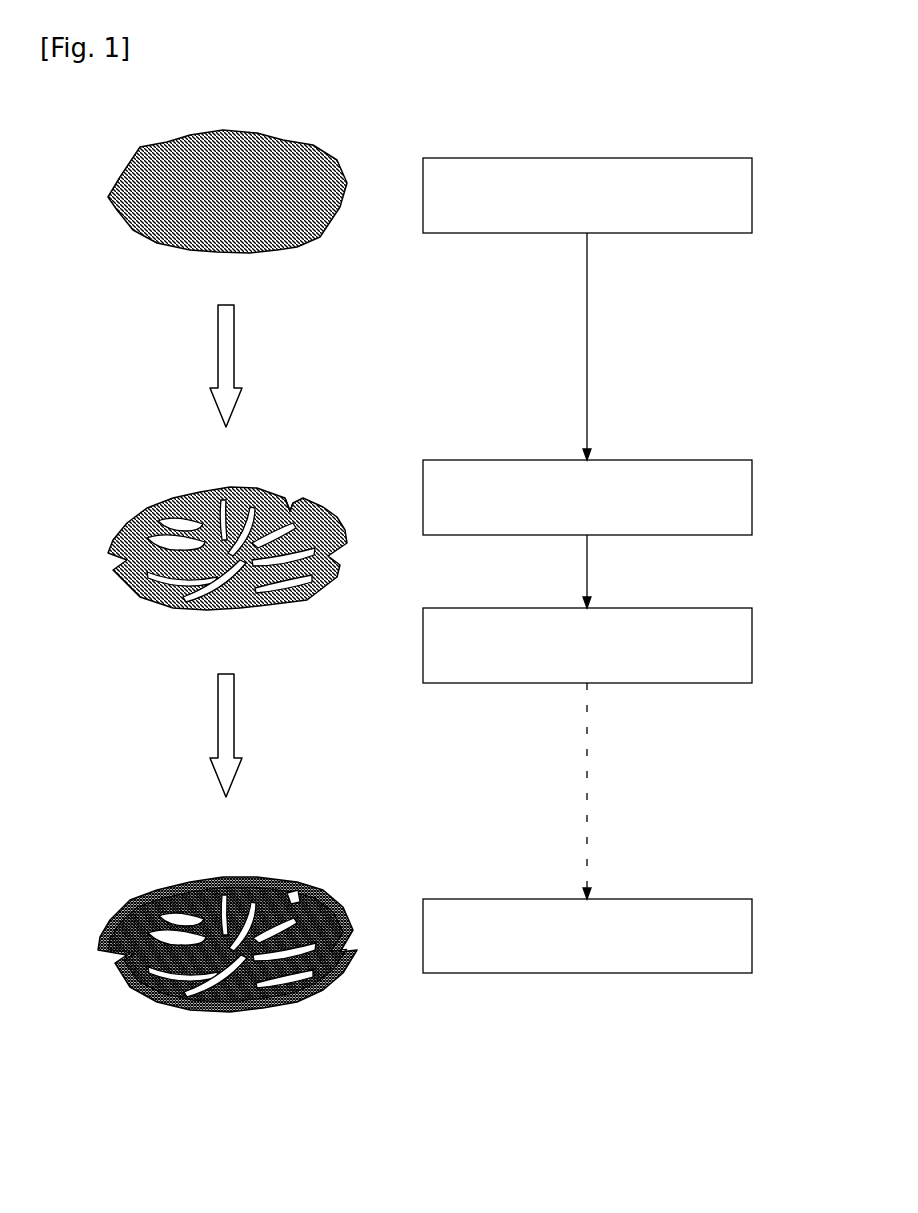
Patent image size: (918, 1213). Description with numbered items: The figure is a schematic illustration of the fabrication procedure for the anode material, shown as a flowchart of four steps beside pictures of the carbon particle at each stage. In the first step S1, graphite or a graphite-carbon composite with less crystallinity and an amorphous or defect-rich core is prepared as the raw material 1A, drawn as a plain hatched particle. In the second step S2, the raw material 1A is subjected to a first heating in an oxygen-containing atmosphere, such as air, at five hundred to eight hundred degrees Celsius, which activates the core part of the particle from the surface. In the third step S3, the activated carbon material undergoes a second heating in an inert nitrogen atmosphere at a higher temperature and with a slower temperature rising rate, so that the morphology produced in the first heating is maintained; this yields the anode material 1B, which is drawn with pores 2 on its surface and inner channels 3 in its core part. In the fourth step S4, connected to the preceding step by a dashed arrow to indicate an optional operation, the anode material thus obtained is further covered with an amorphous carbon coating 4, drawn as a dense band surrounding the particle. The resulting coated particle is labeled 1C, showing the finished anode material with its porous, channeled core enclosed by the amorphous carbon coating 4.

The raw material 1A is at (285, 253).
The anode material 1B is at (234, 543).
The carbon material coated with amorphous carbon 1C is at (230, 941).
The pores 2 is at (292, 506).
The inner channels 3 is at (160, 520).
The amorphous carbon coating 4 is at (334, 897).
The raw material preparation step S1 is at (615, 195).
The first heating step S2 is at (615, 497).
The second heating step S3 is at (615, 645).
The amorphous carbon coating step S4 is at (615, 936).